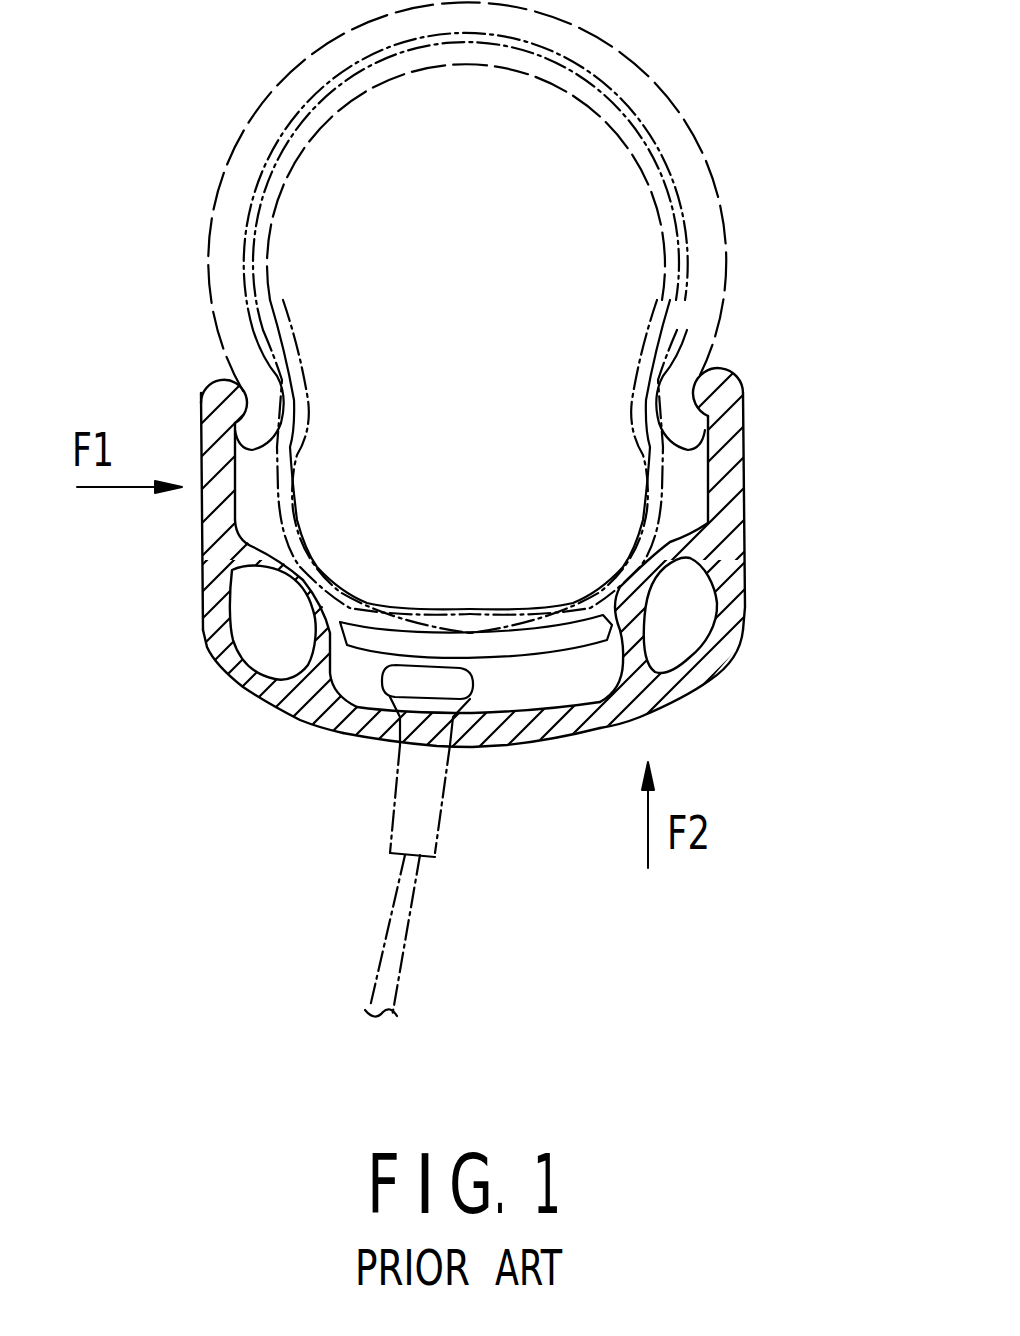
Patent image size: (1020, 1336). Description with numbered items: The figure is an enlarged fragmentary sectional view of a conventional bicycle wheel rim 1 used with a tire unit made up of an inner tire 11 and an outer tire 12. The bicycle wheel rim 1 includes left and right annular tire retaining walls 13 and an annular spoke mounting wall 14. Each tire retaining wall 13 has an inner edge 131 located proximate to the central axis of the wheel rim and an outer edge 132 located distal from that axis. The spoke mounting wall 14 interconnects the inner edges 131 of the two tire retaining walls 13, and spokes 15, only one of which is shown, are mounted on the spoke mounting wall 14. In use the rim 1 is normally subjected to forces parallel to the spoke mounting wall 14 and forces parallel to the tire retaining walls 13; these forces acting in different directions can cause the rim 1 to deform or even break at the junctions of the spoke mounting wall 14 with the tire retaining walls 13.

The bicycle wheel rim 1 is at (760, 486).
The inner tire 11 is at (667, 200).
The outer tire 12 is at (674, 125).
The tire retaining wall 13 is at (210, 555).
The inner edge 131 is at (222, 650).
The outer edge 132 is at (222, 398).
The spoke mounting wall 14 is at (550, 727).
The spoke 15 is at (412, 912).